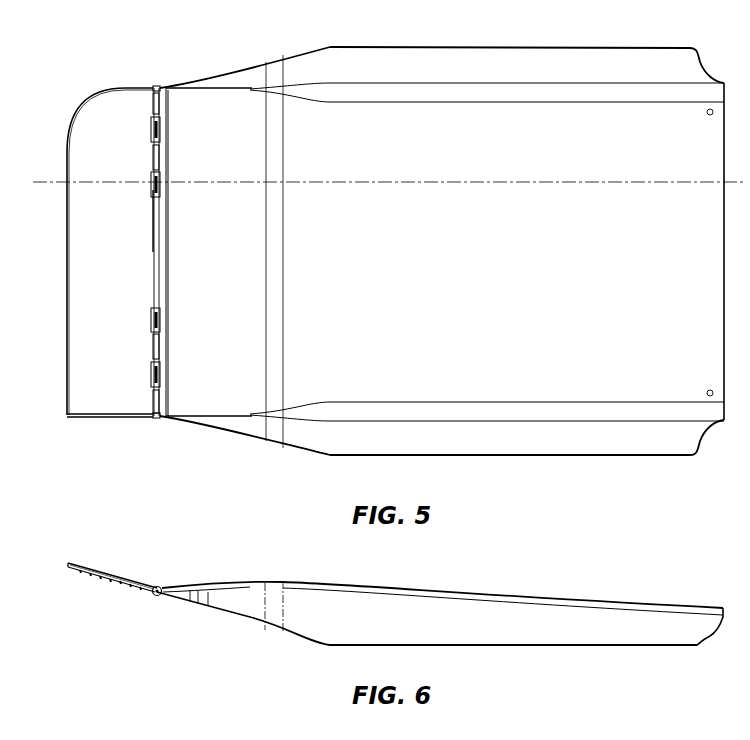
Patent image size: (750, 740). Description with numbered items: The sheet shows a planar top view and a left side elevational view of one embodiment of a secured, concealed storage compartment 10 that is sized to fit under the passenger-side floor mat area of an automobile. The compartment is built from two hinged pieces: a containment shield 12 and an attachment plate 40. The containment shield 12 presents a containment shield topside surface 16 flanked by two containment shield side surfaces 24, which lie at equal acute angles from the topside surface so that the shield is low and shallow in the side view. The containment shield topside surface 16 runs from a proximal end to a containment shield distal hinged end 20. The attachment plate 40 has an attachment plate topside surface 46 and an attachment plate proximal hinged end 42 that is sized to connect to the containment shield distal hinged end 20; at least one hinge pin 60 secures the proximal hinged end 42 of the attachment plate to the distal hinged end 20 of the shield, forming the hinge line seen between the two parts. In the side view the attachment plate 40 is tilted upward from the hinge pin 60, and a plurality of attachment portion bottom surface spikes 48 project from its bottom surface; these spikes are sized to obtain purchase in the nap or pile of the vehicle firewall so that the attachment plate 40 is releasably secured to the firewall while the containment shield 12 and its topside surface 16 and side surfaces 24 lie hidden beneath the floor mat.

In FIG. 5, the concealed, secure storage compartment 10 is at (658, 40).
In FIG. 6, the concealed, secure storage compartment 10 is at (608, 590).
In FIG. 5, the containment shield 12 is at (237, 438).
In FIG. 6, the containment shield 12 is at (233, 620).
In FIG. 5, the containment shield topside surface 16 is at (503, 267).
In FIG. 5, the containment shield distal hinged end 20 is at (167, 145).
In FIG. 5, the containment shield side surface 24 is at (500, 71).
In FIG. 6, the containment shield side surface 24 is at (448, 631).
In FIG. 5, the attachment plate 40 is at (91, 426).
In FIG. 6, the attachment plate 40 is at (100, 590).
In FIG. 5, the attachment plate proximal hinged end 42 is at (151, 126).
In FIG. 5, the attachment plate topside surface 46 is at (121, 265).
In FIG. 6, the attachment plate topside surface 46 is at (128, 578).
In FIG. 6, the attachment portion bottom surface spikes 48 is at (78, 573).
In FIG. 5, the hinge pin 60 is at (157, 88).
In FIG. 6, the hinge pin 60 is at (156, 596).